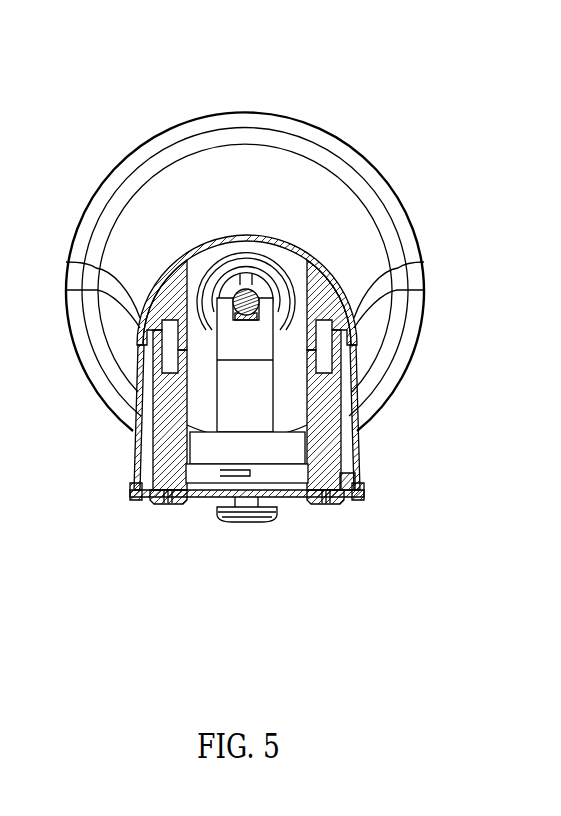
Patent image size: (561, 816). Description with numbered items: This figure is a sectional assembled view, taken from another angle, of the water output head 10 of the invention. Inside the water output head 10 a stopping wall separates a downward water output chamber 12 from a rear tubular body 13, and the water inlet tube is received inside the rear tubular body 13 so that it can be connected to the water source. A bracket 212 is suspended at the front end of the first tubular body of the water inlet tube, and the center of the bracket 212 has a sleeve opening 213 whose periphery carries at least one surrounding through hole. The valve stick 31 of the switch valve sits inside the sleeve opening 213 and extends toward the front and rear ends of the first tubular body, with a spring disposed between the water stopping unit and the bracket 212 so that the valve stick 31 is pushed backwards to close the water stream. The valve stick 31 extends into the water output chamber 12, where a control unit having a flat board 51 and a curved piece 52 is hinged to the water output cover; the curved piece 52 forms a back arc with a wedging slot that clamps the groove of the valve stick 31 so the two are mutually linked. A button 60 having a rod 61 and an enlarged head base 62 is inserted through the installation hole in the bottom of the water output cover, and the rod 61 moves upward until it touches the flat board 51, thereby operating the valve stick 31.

The water output head 10 is at (402, 160).
The water output chamber 12 is at (140, 345).
The rear tubular body 13 is at (160, 133).
The valve stick 31 is at (232, 290).
The flat board 51 is at (133, 463).
The curved piece 52 is at (358, 398).
The button 60 is at (278, 523).
The rod 61 is at (313, 497).
The head base 62 is at (217, 517).
The bracket 212 is at (247, 284).
The sleeve opening 213 is at (266, 288).